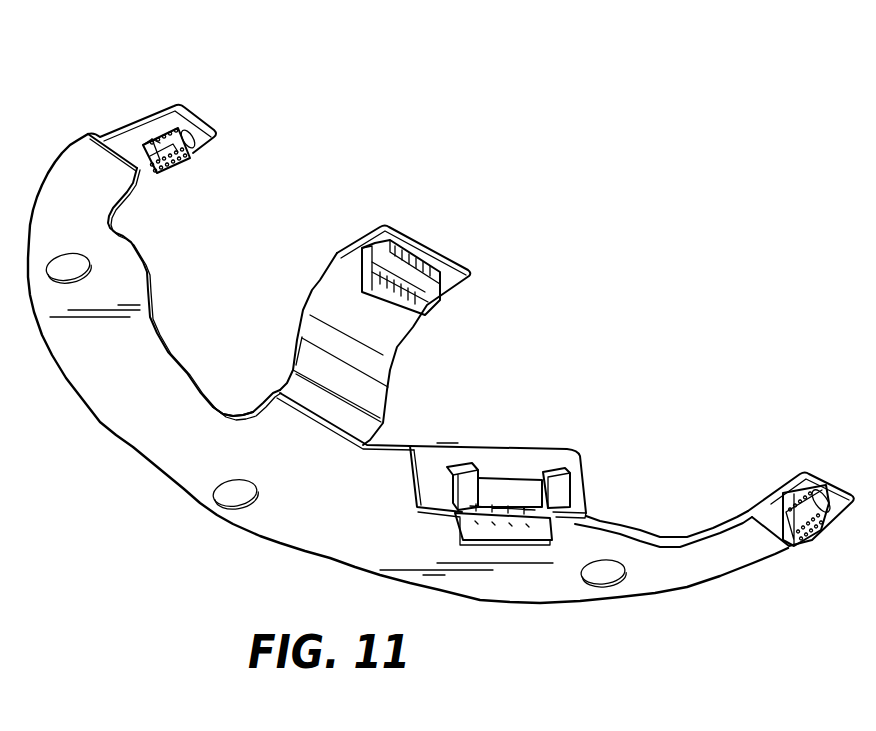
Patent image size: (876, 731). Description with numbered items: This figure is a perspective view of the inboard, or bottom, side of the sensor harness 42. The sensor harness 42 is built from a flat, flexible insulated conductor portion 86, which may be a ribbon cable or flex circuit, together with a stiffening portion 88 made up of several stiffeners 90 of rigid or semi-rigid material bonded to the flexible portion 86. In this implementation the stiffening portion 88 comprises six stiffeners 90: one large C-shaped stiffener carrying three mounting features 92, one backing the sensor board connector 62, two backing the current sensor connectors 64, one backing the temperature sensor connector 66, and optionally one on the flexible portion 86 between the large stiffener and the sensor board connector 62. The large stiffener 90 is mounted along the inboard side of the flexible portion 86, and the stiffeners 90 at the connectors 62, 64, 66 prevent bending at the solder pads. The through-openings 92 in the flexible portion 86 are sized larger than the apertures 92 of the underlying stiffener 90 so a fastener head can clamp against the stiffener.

The sensor harness 42 is at (103, 86).
The flexible insulated conductor portion 86 is at (317, 283).
The stiffening portion 88 is at (234, 404).
The stiffener 90 is at (470, 272).
The sensor board connector 62 is at (440, 297).
The temperature sensor connector 66 is at (527, 532).
The current sensor connector 64 is at (812, 540).
The mounting feature 92 is at (233, 492).